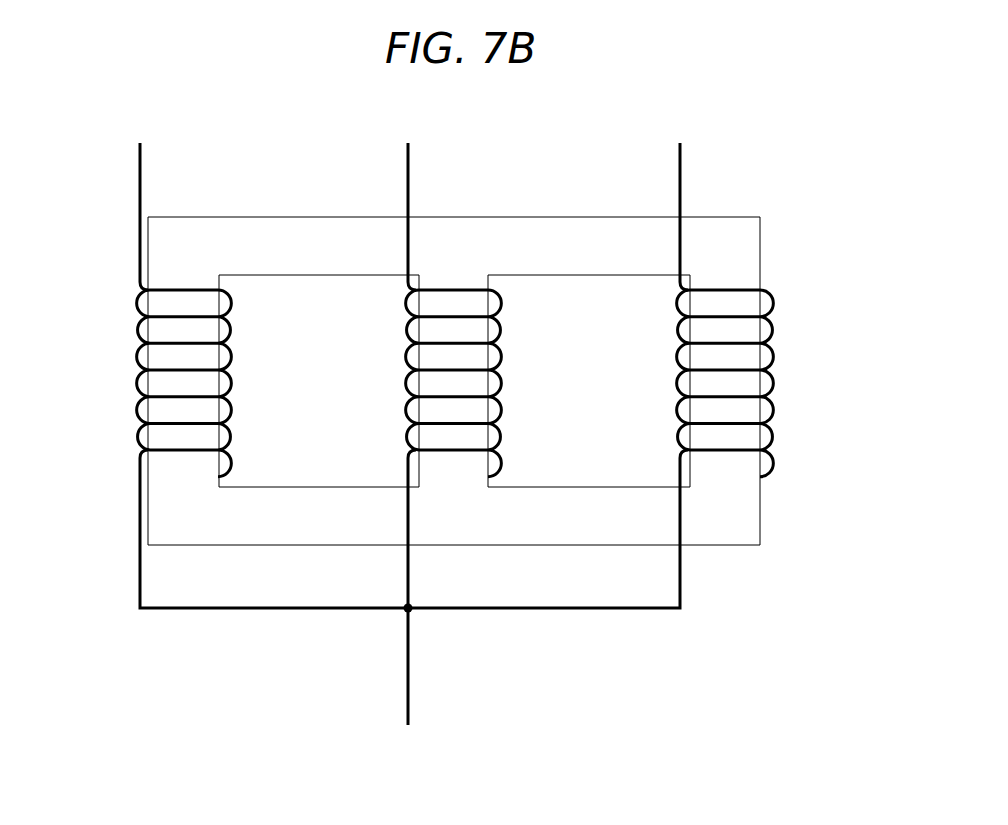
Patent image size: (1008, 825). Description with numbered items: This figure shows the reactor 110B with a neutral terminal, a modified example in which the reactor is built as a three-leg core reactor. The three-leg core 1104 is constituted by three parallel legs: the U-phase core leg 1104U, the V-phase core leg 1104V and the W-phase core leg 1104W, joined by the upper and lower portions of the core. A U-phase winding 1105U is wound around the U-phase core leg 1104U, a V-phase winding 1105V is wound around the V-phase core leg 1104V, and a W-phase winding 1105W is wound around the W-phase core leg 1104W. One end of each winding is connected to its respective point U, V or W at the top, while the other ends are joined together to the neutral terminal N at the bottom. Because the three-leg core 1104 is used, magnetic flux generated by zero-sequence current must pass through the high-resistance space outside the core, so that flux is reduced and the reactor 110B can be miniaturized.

The reactor with a neutral terminal 110B is at (555, 110).
The three-leg core 1104 is at (722, 217).
The U-phase core leg 1104U is at (137, 410).
The V-phase core leg 1104V is at (405, 410).
The W-phase core leg 1104W is at (677, 410).
The U-phase winding 1105U is at (232, 321).
The V-phase winding 1105V is at (502, 322).
The W-phase winding 1105W is at (773, 326).